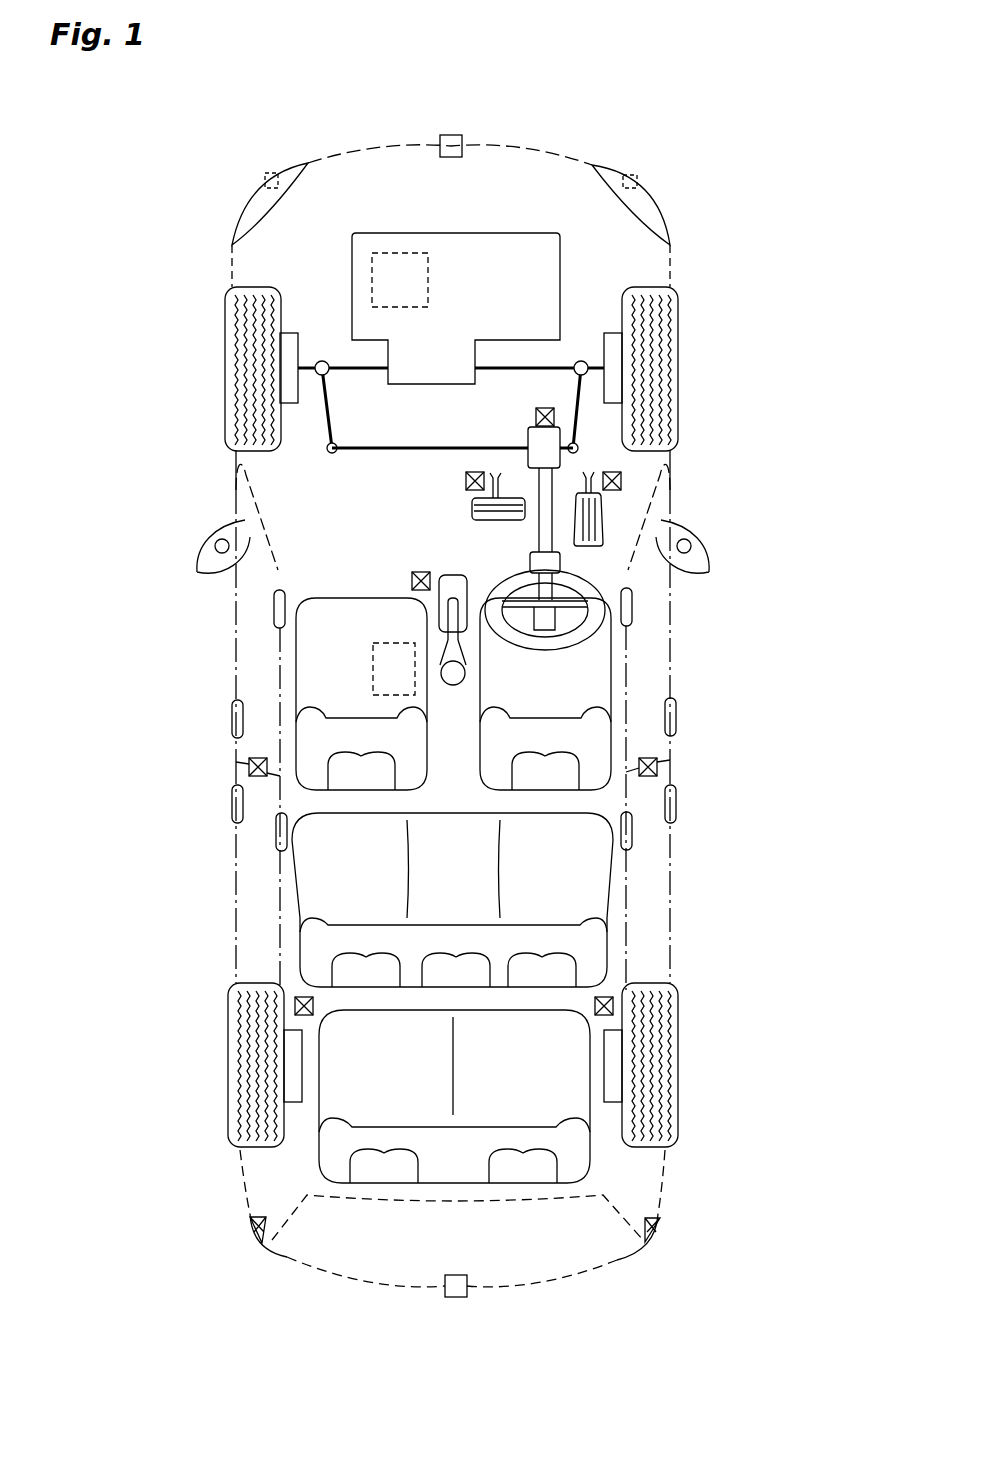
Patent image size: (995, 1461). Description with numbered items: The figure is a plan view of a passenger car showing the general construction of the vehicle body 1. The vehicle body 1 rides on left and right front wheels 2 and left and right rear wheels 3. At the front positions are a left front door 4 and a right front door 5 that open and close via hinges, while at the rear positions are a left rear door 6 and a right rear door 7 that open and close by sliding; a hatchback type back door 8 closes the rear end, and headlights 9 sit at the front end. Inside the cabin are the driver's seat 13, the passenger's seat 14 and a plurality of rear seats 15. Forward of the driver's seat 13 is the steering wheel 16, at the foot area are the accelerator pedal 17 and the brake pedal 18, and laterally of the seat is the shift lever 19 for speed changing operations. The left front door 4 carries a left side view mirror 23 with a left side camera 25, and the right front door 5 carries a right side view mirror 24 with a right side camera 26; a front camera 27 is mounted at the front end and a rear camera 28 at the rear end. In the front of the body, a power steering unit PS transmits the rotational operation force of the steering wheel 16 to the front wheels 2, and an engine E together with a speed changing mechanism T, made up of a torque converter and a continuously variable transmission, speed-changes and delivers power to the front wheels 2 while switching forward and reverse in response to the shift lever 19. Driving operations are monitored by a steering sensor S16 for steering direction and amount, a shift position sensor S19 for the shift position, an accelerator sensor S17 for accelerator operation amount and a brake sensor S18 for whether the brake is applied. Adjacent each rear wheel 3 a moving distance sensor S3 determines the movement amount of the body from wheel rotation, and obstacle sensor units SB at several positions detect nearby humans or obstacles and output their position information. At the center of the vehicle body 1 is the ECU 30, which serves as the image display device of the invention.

The vehicle body 1 is at (390, 148).
The front camera 27 is at (451, 135).
The rear camera 28 is at (456, 1297).
The obstacle sensor unit SB is at (268, 178).
The headlights 9 is at (240, 222).
The engine E is at (470, 233).
The speed changing mechanism T is at (372, 290).
The front wheels 2 is at (228, 372).
The rear wheels 3 is at (228, 1055).
The power steering unit PS is at (528, 440).
The steering sensor S16 is at (540, 407).
The steering wheel 16 is at (543, 647).
The brake pedal 18 is at (512, 520).
The brake sensor S18 is at (466, 481).
The accelerator pedal 17 is at (590, 548).
The accelerator sensor S17 is at (622, 481).
The shift lever 19 is at (457, 684).
The shift position sensor S19 is at (420, 572).
The passenger's seat 14 is at (347, 700).
The driver's seat 13 is at (582, 700).
The rear seats 15 is at (415, 813).
The ECU 30 is at (388, 643).
The left front door 4 is at (235, 606).
The right front door 5 is at (670, 685).
The left rear door 6 is at (236, 882).
The right rear door 7 is at (670, 882).
The left side view mirror 23 is at (218, 528).
The left side camera 25 is at (212, 552).
The right side view mirror 24 is at (700, 548).
The right side camera 26 is at (685, 553).
The moving distance sensor S3 is at (305, 1015).
The back door 8 is at (367, 1282).